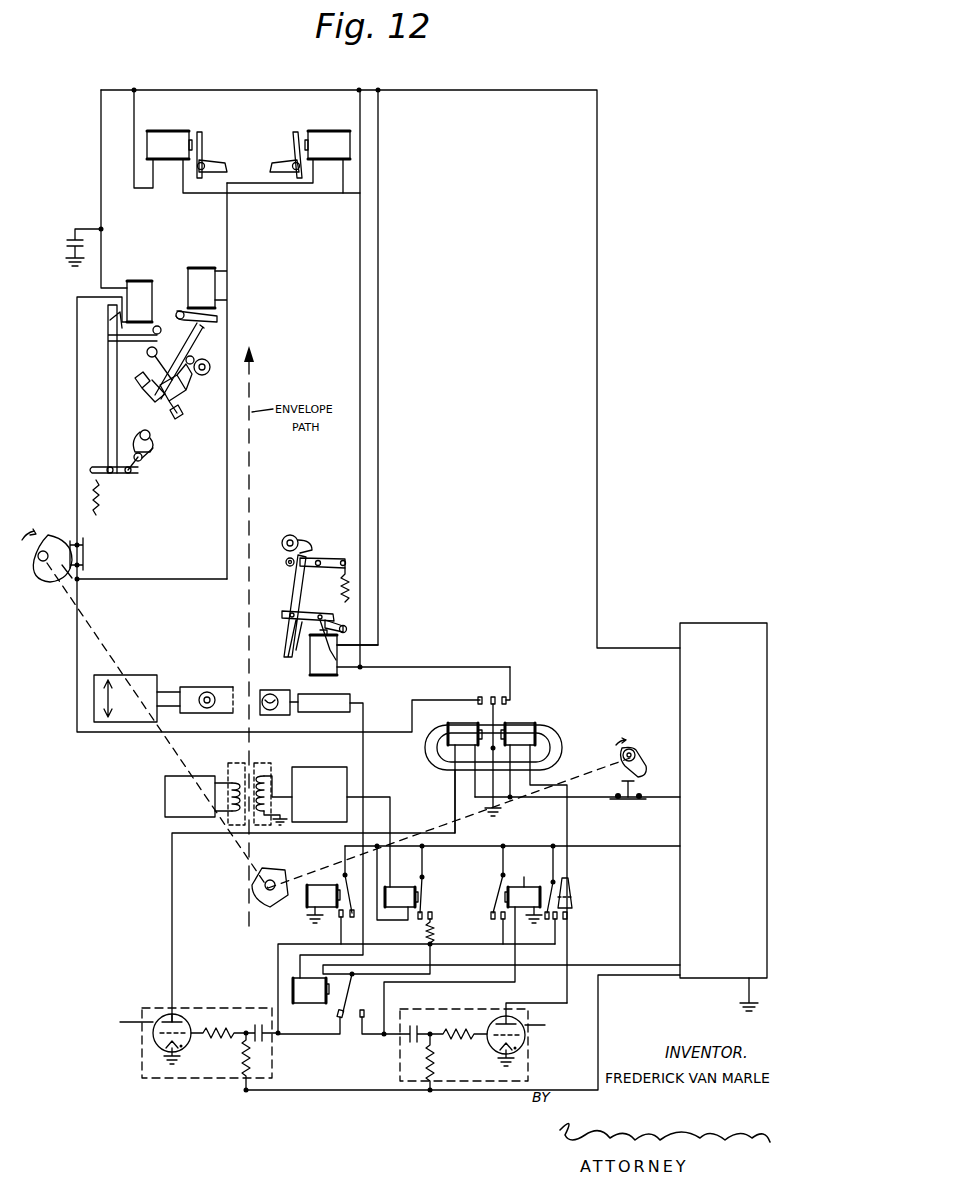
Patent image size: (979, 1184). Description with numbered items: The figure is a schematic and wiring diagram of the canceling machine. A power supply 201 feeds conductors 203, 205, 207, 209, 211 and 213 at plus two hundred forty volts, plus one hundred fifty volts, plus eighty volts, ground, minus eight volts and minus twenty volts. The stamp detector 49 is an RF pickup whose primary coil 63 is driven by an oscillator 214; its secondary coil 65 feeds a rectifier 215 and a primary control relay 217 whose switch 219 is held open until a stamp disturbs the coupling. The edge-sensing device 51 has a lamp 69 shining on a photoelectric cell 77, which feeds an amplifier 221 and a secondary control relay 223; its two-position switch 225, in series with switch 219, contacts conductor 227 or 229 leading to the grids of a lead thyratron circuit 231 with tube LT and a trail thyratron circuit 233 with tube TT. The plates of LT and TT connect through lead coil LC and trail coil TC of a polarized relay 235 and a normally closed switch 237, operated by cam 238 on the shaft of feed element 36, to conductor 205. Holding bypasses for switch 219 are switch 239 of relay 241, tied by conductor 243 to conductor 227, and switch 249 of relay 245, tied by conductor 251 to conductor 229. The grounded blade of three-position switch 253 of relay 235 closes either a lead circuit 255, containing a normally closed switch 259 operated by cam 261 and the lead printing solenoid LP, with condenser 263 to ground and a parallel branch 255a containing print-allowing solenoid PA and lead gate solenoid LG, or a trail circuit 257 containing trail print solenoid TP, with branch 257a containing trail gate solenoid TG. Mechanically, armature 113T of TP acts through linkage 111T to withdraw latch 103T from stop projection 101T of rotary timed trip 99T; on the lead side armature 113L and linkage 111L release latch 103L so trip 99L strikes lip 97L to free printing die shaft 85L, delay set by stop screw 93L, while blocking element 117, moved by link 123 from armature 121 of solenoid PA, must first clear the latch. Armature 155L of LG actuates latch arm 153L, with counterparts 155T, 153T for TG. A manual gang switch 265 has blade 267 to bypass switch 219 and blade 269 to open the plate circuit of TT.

The conductor 203 is at (278, 90).
The condenser 263 is at (66, 240).
The trail gate solenoid TG is at (165, 137).
The lead gate solenoid LG is at (326, 140).
The transfer armature 155T is at (213, 120).
The transfer gate lever 153T is at (214, 158).
The armature 155L is at (290, 134).
The latch arm 153L is at (279, 165).
The lead printing solenoid LP is at (150, 282).
The print-allowing solenoid PA is at (216, 289).
The branch circuit 255a is at (142, 579).
The linkage 111L is at (95, 350).
The armature 113L is at (148, 336).
The armature 121 is at (222, 320).
The link 123 is at (190, 352).
The blocking element 117 is at (148, 363).
The printing die shaft 85L is at (202, 376).
The stop screw 93L is at (132, 386).
The lip 97L is at (168, 422).
The trip element 99L is at (135, 440).
The roller tipped latch 103L is at (140, 470).
The cam 261 is at (52, 535).
The switch 259 is at (88, 546).
The lead circuit 255 is at (77, 648).
The envelope edge-sensing device 51 is at (64, 710).
The lamp 69 is at (205, 690).
The rotary timed trip 99T is at (300, 540).
The stop projection 101T is at (285, 558).
The roller tipped latch 103T is at (312, 557).
The linkage 111T is at (283, 593).
The armature 113T is at (345, 622).
The trail print solenoid TP is at (320, 667).
The photoelectric cell 77 is at (263, 702).
The amplifier 221 is at (345, 694).
The branch circuit 257a is at (362, 462).
The trail circuit 257 is at (468, 667).
The three position switch 253 is at (497, 714).
The lead coil LC is at (462, 728).
The trail coil TC is at (530, 730).
The conductor 205 is at (660, 792).
The switch 237 is at (624, 803).
The cam 238 is at (640, 752).
The polarized relay 235 is at (593, 734).
The electric power supply 201 is at (712, 625).
The conductor 209 is at (746, 994).
The conductor 211 is at (620, 846).
The conductor 207 is at (602, 962).
The conductor 213 is at (599, 1016).
The stamp detector 49 is at (138, 799).
The oscillator 214 is at (160, 811).
The primary coil 63 is at (240, 764).
The secondary coil 65 is at (258, 764).
The rectifier 215 is at (312, 767).
The feeding element 36 is at (250, 896).
The conductor 243 is at (276, 958).
The switch 239 is at (340, 876).
The relay 241 is at (310, 896).
The primary control relay 217 is at (403, 890).
The switch 219 is at (432, 900).
The switch 249 is at (492, 895).
The relay 245 is at (523, 889).
The switch blade 267 is at (536, 872).
The gang switch 265 is at (574, 884).
The switch blade 269 is at (574, 906).
The conductor 251 is at (516, 974).
The secondary control relay 223 is at (316, 1004).
The relay switch 225 is at (349, 994).
The conductor 227 is at (335, 1037).
The conductor 229 is at (370, 1050).
The lead thyratron tube LT is at (141, 1038).
The lead thyratron circuit 231 is at (205, 1085).
The trail thyratron circuit 233 is at (470, 1108).
The trail thyratron tube TT is at (527, 1034).